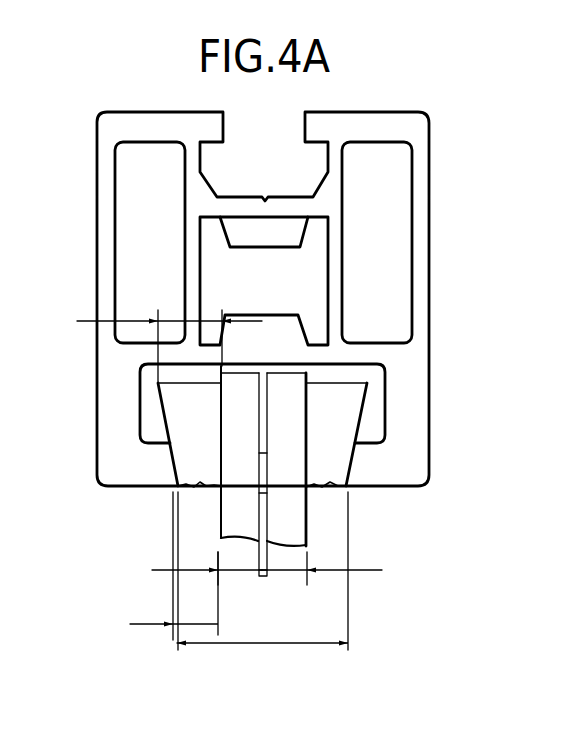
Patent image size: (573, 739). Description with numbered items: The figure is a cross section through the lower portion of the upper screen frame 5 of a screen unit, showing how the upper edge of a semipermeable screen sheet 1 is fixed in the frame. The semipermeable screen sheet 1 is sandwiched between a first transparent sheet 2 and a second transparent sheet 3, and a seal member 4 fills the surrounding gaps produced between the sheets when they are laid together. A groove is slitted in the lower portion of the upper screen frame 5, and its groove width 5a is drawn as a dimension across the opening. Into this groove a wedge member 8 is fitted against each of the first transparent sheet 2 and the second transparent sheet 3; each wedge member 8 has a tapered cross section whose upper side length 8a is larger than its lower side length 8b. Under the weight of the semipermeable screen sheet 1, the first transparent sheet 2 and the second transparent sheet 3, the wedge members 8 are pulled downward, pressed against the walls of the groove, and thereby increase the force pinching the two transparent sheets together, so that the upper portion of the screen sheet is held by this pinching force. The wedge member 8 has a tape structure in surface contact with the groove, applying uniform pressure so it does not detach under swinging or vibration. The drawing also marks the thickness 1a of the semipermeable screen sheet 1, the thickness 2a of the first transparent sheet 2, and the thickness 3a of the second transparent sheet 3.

The semipermeable screen sheet 1 is at (262, 518).
The thickness of the semipermeable screen sheet 1a is at (263, 577).
The first transparent sheet 2 is at (235, 452).
The thickness of the first transparent sheet 2a is at (240, 570).
The second transparent sheet 3 is at (290, 408).
The thickness of the second transparent sheet 3a is at (292, 570).
The seal member 4 is at (263, 425).
The upper screen frame 5 is at (403, 355).
The groove width of the upper screen frame 5a is at (262, 571).
The wedge member 8 is at (343, 395).
The upper side length of the wedge member cross section 8a is at (170, 321).
The lower side length of the wedge member cross section 8b is at (192, 624).